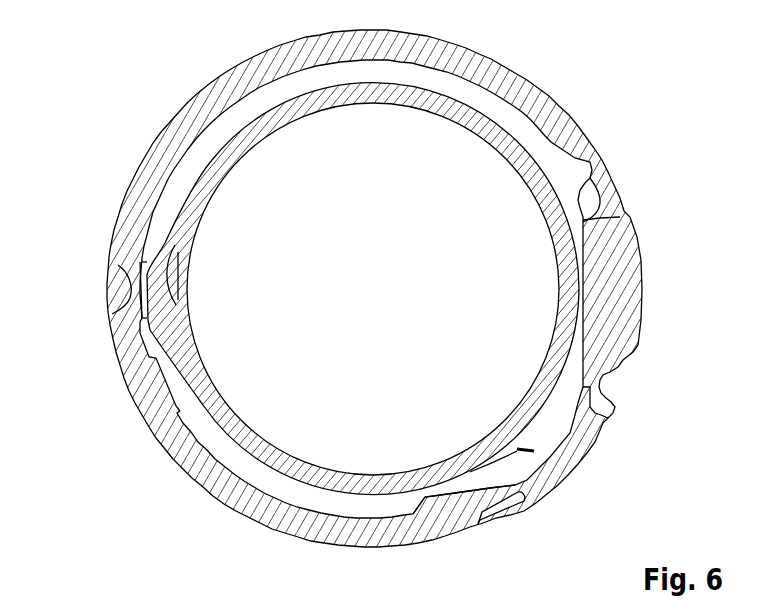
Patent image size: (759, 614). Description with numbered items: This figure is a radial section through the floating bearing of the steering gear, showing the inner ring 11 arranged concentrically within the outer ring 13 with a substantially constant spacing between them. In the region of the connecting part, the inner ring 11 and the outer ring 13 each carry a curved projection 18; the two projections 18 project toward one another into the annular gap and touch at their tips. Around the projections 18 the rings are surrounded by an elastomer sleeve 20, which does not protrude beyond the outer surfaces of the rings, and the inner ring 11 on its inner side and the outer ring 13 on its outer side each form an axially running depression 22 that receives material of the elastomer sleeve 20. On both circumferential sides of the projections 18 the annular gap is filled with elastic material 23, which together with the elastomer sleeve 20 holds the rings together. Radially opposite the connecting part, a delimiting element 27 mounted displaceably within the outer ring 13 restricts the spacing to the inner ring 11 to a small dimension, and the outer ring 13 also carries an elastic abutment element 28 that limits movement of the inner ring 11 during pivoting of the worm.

The inner ring 11 is at (503, 138).
The outer ring 13 is at (570, 143).
The projection 18 is at (130, 274).
The elastomer sleeve 20 is at (175, 305).
The depression 22 is at (170, 288).
The elastic material 23 is at (142, 260).
The delimiting element 27 is at (620, 267).
The elastic abutment element 28 is at (458, 497).